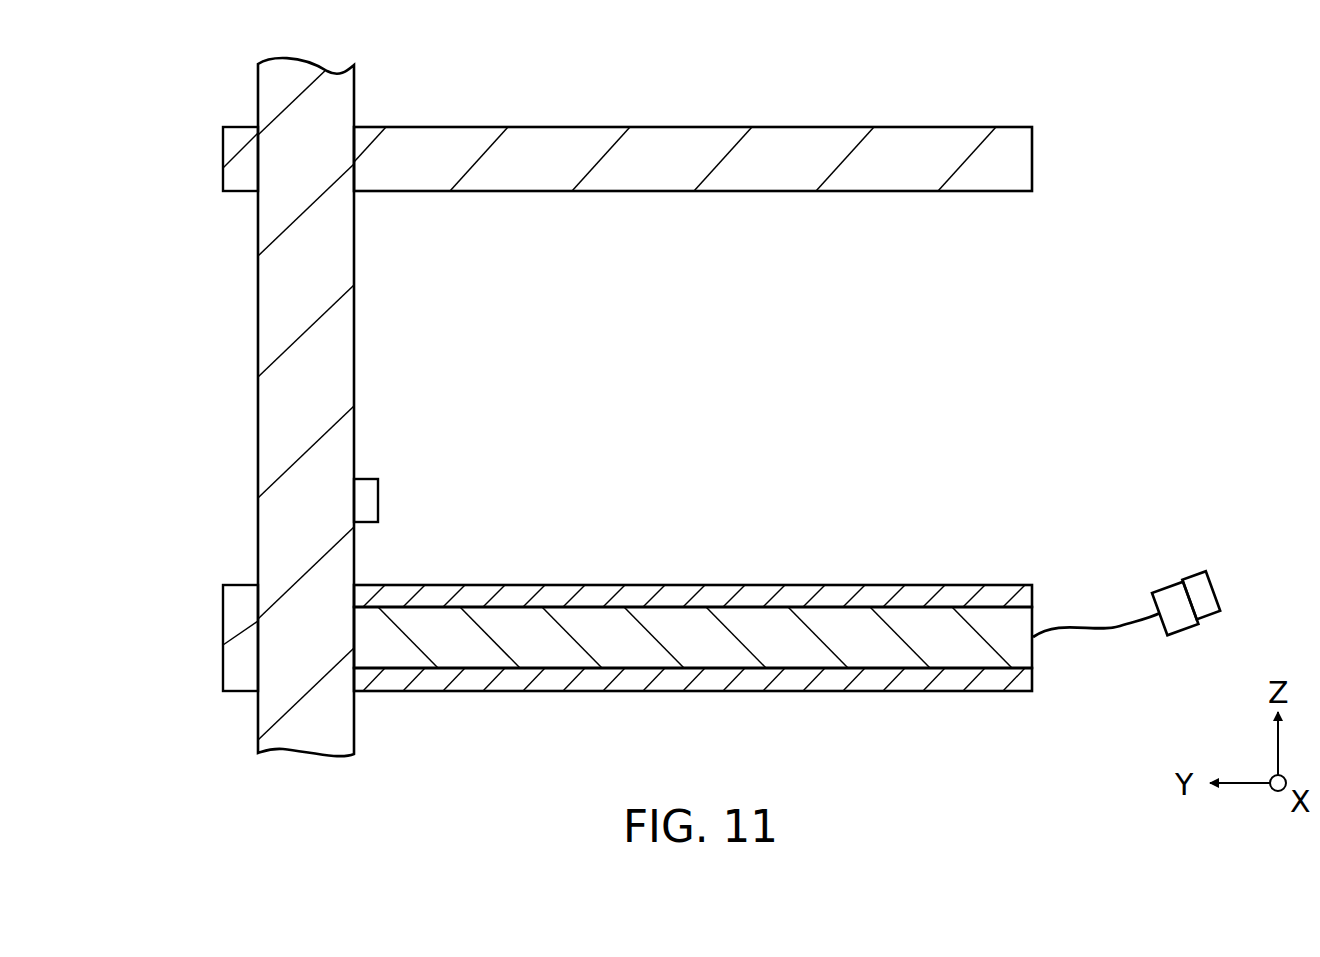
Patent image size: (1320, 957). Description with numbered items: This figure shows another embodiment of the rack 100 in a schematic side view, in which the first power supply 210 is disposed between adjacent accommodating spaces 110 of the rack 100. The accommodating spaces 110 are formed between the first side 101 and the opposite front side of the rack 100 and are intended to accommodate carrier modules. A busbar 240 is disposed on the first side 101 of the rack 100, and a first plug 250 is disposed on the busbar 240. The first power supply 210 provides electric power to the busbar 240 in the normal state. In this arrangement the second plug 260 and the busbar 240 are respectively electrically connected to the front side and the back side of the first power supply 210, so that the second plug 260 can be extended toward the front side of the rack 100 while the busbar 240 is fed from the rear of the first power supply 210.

The rack 100 is at (215, 107).
The first side 101 is at (226, 640).
The accommodating space 110 is at (713, 258).
The first power supply 210 is at (492, 650).
The busbar 240 is at (302, 425).
The first plug 250 is at (362, 500).
The second plug 260 is at (1185, 639).